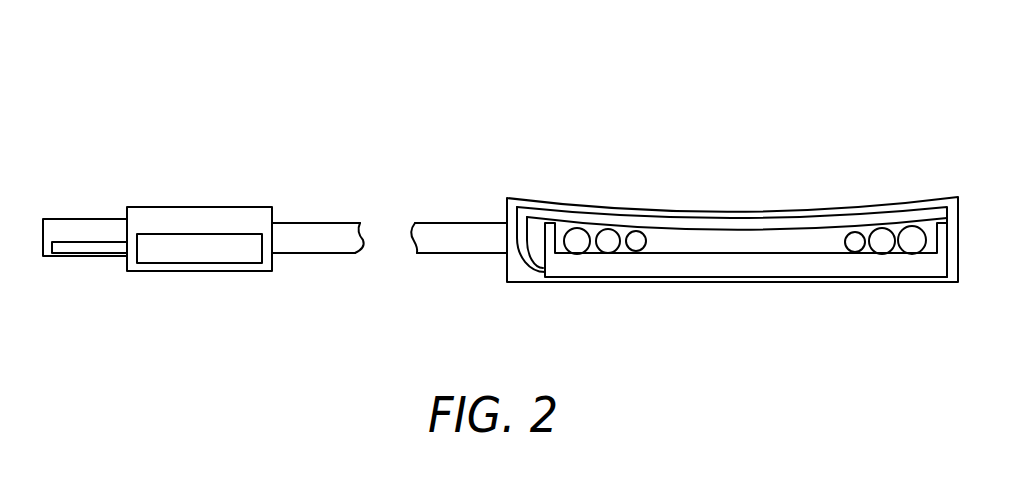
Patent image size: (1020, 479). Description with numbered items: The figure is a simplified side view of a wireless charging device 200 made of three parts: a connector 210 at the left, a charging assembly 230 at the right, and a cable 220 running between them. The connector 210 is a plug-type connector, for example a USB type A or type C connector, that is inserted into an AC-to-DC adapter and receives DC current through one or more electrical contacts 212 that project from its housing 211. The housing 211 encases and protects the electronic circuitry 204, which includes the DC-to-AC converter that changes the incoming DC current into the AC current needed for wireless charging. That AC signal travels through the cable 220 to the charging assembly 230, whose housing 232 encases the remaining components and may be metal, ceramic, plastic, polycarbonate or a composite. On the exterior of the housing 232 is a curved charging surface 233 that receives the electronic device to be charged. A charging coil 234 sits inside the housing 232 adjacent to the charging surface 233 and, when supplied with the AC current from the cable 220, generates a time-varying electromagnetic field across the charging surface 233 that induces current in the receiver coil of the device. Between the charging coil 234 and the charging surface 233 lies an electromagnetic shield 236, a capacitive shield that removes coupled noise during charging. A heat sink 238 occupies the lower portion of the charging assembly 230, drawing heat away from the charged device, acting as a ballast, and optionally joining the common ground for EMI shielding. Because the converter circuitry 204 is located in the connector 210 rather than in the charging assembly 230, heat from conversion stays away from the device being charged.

The wireless charging device 200 is at (375, 103).
The connector 210 is at (193, 155).
The housing 211 is at (143, 207).
The electronic circuitry 204 is at (215, 260).
The electrical contacts 212 is at (85, 247).
The cable 220 is at (330, 223).
The charging assembly 230 is at (716, 153).
The housing 232 is at (506, 200).
The charging surface 233 is at (603, 211).
The charging coil 234 is at (882, 236).
The electromagnetic shield 236 is at (692, 226).
The heat sink 238 is at (759, 275).